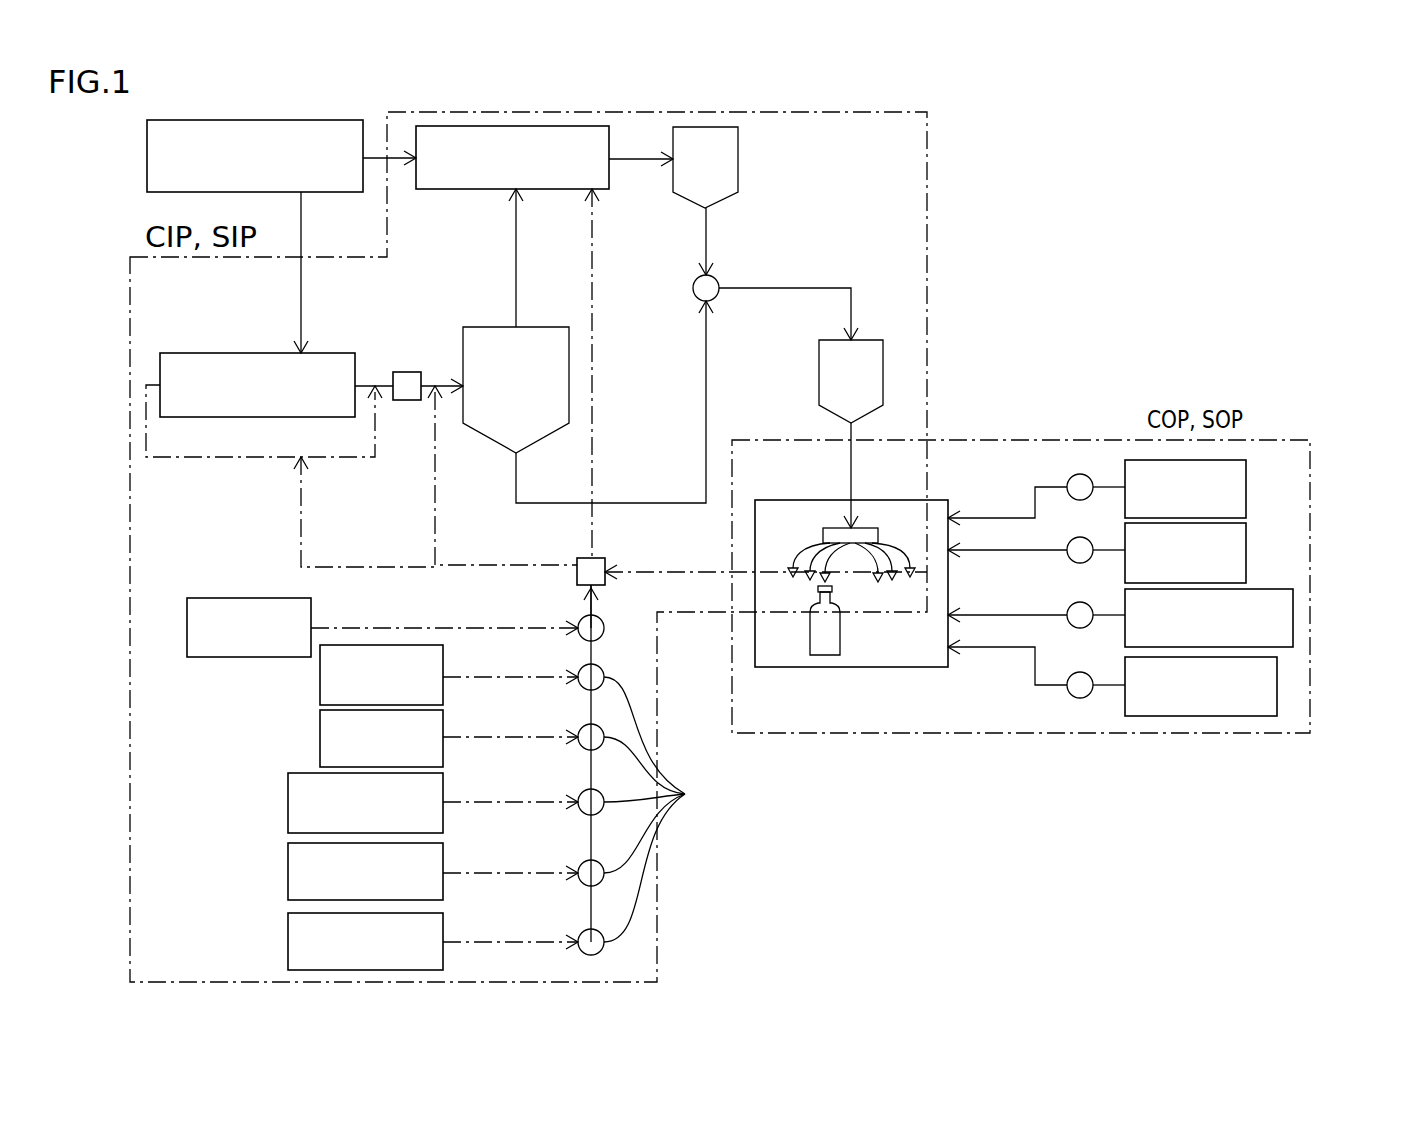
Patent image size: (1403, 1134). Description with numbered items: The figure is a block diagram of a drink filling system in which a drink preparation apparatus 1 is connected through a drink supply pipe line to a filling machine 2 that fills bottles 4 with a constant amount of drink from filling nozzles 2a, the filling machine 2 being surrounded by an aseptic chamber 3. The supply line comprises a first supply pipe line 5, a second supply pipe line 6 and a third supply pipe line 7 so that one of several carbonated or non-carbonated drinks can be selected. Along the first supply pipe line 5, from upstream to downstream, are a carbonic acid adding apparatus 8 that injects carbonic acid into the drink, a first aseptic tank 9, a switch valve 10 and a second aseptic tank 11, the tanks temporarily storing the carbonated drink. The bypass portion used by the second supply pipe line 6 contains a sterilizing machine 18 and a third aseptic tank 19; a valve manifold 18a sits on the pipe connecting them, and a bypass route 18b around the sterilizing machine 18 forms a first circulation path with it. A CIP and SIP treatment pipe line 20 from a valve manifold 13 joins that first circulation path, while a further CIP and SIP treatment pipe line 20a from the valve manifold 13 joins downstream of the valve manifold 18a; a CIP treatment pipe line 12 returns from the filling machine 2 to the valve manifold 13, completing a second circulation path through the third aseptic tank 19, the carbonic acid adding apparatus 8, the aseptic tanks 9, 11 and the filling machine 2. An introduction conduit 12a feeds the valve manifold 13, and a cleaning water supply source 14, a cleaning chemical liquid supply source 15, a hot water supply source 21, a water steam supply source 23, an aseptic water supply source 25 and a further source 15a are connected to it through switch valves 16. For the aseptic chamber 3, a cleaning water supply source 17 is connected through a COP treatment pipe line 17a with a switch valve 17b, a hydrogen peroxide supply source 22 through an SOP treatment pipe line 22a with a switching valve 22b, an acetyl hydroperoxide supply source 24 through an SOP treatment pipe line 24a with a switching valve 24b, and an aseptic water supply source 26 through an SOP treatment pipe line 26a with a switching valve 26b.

The drink preparation apparatus 1 is at (147, 157).
The filling machine 2 is at (827, 520).
The filling nozzles 2a is at (793, 585).
The aseptic chamber 3 is at (862, 667).
The bottle 4 is at (826, 655).
The first supply pipe line 5 is at (652, 171).
The second supply pipe line 6 is at (504, 292).
The third supply pipe line 7 is at (648, 491).
The carbonic acid adding apparatus 8 is at (430, 190).
The first aseptic tank 9 is at (738, 158).
The switch valve 10 is at (693, 290).
The second aseptic tank 11 is at (819, 382).
The CIP treatment pipe line 12 is at (695, 560).
The introduction conduit 12a is at (588, 614).
The valve manifold 13 is at (577, 560).
The cleaning water supply source 14 is at (320, 688).
The cleaning chemical liquid supply source 15 is at (288, 873).
The aseptic air supply 15a is at (288, 942).
The switch valves 16 is at (647, 785).
The cleaning water supply source 17 is at (1246, 487).
The COP treatment pipe line 17a is at (1000, 518).
The switch valve 17b is at (1080, 474).
The sterilizing machine 18 is at (187, 417).
The valve manifold 18a is at (407, 372).
The bypass route 18b is at (255, 457).
The third aseptic tank 19 is at (475, 432).
The CIP and SIP treatment pipe line 20 is at (373, 555).
The CIP and SIP treatment pipe line 20a is at (447, 530).
The hot water supply source 21 is at (320, 745).
The hydrogen peroxide supply source 22 is at (1277, 680).
The SOP treatment pipe line 22a is at (995, 647).
The switching valve 22b is at (1080, 698).
The water steam supply source 23 is at (288, 802).
The acetyl hydroperoxide supply source 24 is at (1293, 612).
The SOP treatment pipe line 24a is at (990, 615).
The switching valve 24b is at (1080, 628).
The aseptic water supply source 25 is at (213, 598).
The aseptic water supply source 26 is at (1246, 550).
The SOP treatment pipe line 26a is at (1028, 550).
The switching valve 26b is at (1080, 537).